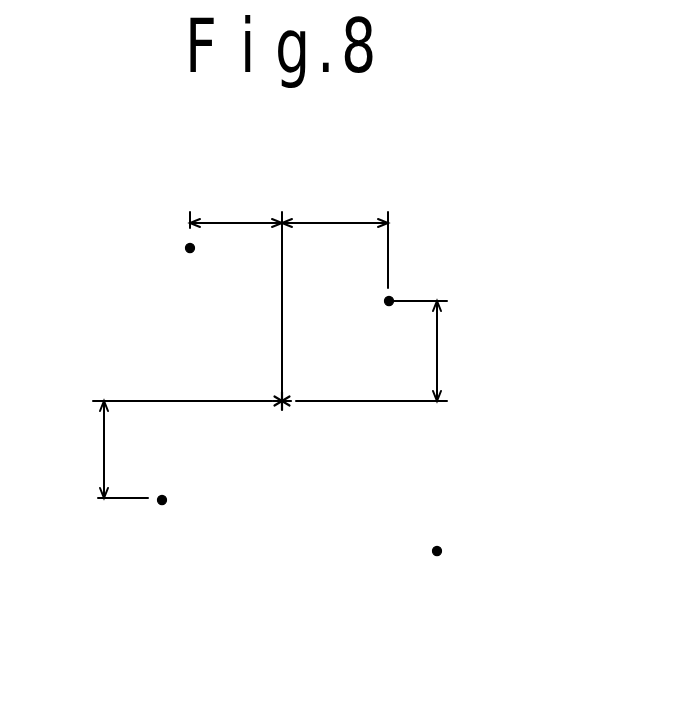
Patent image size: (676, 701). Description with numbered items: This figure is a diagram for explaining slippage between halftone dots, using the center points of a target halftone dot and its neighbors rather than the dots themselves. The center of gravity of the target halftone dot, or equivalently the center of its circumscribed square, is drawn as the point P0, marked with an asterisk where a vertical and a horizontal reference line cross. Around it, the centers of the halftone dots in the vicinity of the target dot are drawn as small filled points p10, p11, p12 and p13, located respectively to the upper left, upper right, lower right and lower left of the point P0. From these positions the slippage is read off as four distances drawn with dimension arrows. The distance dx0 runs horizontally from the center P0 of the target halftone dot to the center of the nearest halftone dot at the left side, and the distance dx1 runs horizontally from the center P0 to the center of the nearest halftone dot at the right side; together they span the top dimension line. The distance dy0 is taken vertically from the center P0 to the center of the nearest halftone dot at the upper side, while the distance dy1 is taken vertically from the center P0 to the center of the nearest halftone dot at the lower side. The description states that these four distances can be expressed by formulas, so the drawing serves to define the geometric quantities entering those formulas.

The center of the target halftone dot P0 is at (282, 418).
The center of a halftone dot in the vicinity p10 is at (176, 252).
The center of a halftone dot in the vicinity p11 is at (394, 290).
The center of a halftone dot in the vicinity p12 is at (450, 544).
The center of a halftone dot in the vicinity p13 is at (162, 513).
The distance to the nearest halftone dot at the left side dx0 is at (236, 198).
The distance to the nearest halftone dot at the right side dx1 is at (335, 228).
The distance to the nearest halftone dot at the upper side dy0 is at (449, 351).
The distance to the nearest halftone dot at the lower side dy1 is at (91, 449).